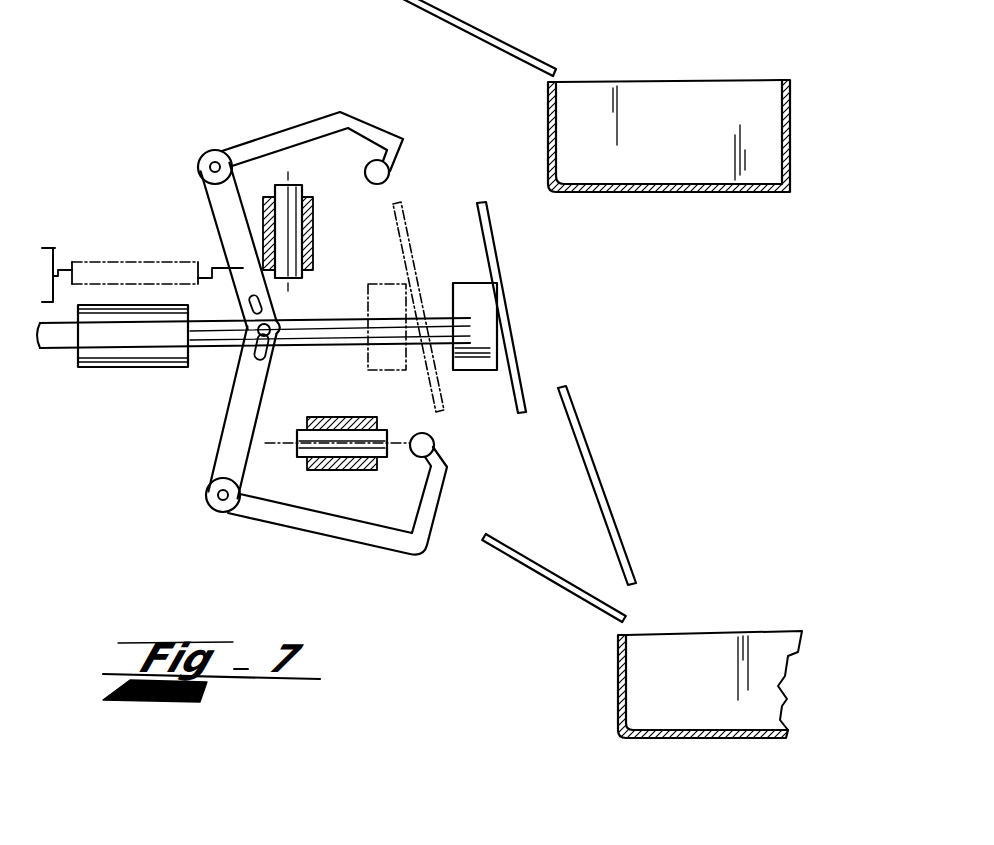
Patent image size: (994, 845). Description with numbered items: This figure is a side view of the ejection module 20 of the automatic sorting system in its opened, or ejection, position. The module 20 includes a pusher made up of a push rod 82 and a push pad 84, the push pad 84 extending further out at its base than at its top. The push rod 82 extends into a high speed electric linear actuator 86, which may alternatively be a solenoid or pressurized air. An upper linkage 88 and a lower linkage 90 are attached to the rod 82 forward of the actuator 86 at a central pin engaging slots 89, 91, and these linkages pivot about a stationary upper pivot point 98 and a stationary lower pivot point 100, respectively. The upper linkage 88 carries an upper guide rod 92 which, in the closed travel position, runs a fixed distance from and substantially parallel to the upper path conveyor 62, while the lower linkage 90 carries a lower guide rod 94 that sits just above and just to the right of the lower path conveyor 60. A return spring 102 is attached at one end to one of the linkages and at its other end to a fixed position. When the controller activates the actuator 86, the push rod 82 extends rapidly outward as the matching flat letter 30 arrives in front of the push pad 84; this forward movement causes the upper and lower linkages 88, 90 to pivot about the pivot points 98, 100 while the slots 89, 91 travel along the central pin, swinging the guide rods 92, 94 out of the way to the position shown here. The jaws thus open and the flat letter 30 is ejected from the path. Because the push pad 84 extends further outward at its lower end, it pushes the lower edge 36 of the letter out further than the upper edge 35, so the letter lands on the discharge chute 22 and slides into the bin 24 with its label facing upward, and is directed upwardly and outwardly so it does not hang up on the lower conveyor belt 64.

The ejection module 20 is at (389, 173).
The discharge chute 22 is at (463, 27).
The bin 24 is at (640, 209).
The flat letter 30 is at (507, 308).
The upper edge 35 is at (489, 208).
The lower edge 36 is at (525, 402).
The lower path conveyor 60 is at (280, 431).
The upper path conveyor 62 is at (322, 251).
The lower conveyor belt 64 is at (379, 412).
The push rod 82 is at (350, 330).
The push pad 84 is at (483, 358).
The high speed electric linear actuator 86 is at (97, 337).
The upper linkage 88 is at (341, 122).
The slot 89 is at (256, 356).
The lower linkage 90 is at (413, 550).
The slot 91 is at (251, 301).
The upper guide rod 92 is at (440, 198).
The lower guide rod 94 is at (431, 441).
The stationary upper pivot point 98 is at (204, 162).
The stationary lower pivot point 100 is at (215, 495).
The return spring 102 is at (145, 262).